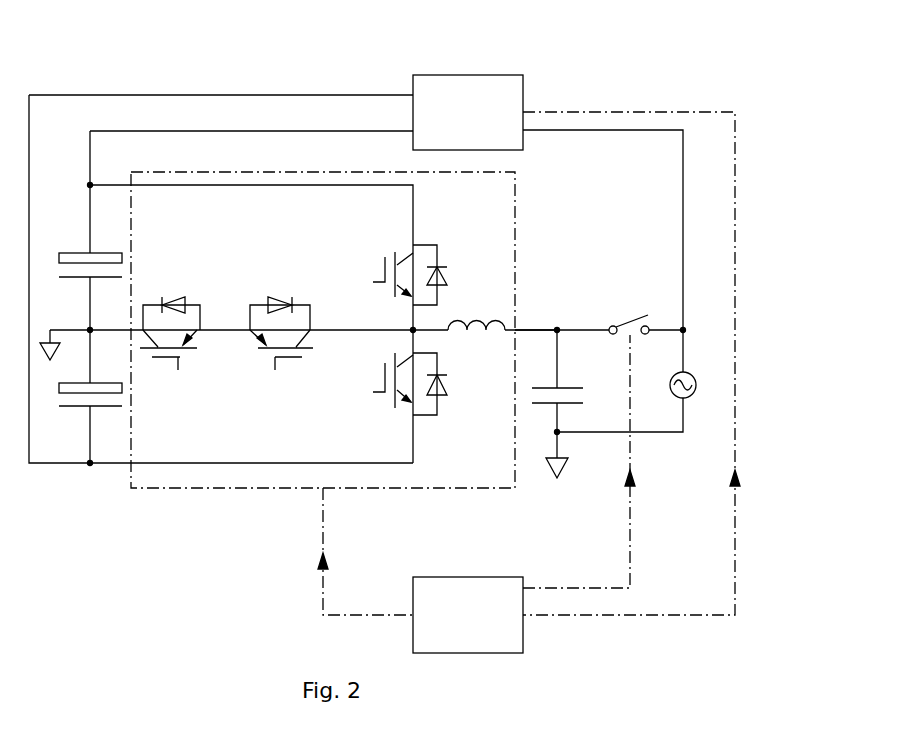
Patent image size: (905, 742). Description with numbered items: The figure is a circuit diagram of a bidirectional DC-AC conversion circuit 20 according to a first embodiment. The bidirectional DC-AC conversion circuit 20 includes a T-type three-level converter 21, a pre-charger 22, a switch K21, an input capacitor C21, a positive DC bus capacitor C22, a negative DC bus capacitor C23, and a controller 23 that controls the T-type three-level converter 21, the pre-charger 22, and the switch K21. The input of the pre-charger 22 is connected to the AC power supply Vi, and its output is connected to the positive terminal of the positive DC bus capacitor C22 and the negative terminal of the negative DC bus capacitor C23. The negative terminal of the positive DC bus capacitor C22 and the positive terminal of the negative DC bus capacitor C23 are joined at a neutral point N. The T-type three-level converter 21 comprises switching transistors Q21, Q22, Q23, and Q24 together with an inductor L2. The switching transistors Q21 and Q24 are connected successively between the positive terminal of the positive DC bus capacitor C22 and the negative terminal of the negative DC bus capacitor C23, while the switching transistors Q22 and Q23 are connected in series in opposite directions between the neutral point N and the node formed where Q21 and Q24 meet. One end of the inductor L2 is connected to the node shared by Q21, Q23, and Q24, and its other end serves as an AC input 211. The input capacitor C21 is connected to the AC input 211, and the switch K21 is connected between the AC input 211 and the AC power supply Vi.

The bidirectional DC-AC conversion circuit 20 is at (598, 80).
The T-type three-level converter 21 is at (515, 265).
The AC input 211 is at (528, 328).
The pre-charger 22 is at (468, 73).
The controller 23 is at (468, 577).
The input capacitor C21 is at (567, 404).
The positive DC bus capacitor C22 is at (80, 252).
The negative DC bus capacitor C23 is at (72, 409).
The neutral point N is at (50, 357).
The switching transistor Q21 is at (395, 275).
The switching transistor Q22 is at (170, 342).
The switching transistor Q23 is at (281, 342).
The switching transistor Q24 is at (395, 384).
The inductor L2 is at (476, 313).
The switch K21 is at (646, 317).
The AC power supply Vi is at (694, 385).